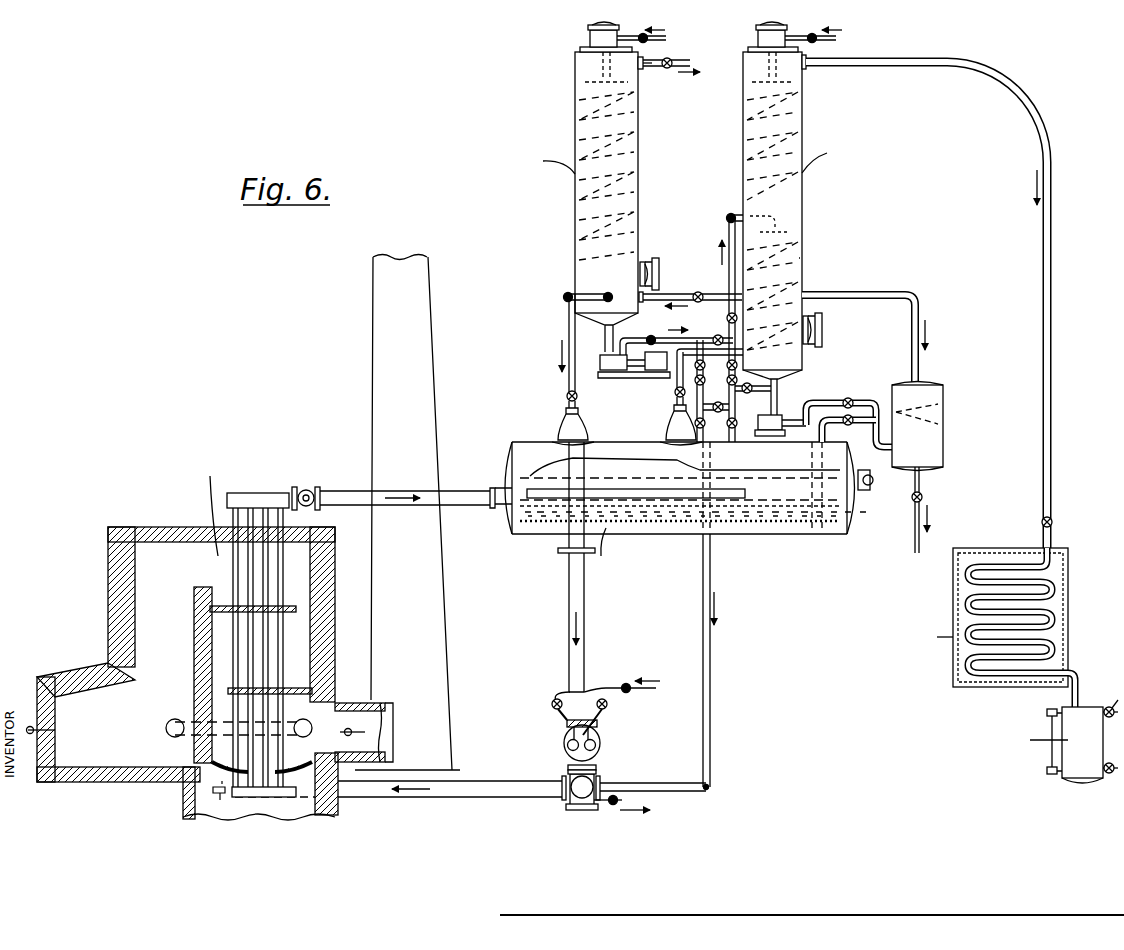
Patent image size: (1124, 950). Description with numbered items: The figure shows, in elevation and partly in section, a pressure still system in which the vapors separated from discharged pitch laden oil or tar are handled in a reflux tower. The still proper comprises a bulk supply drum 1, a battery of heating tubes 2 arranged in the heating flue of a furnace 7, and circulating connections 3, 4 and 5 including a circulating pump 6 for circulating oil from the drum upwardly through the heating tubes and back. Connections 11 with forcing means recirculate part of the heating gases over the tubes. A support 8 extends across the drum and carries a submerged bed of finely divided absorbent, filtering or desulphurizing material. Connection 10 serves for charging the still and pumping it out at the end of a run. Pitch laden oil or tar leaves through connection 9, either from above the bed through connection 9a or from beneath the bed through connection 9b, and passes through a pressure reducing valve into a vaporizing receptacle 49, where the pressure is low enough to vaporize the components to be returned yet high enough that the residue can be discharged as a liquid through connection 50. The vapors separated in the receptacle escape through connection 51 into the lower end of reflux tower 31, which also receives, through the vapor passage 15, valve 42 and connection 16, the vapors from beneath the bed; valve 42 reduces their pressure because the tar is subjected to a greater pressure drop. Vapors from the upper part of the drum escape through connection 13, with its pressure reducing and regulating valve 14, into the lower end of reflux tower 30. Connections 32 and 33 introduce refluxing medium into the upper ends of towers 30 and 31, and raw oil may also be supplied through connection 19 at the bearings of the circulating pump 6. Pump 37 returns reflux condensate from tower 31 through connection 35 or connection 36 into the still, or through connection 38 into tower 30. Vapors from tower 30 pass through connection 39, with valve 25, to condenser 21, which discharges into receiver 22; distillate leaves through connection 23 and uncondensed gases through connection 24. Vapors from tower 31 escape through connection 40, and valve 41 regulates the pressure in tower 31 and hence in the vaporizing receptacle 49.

The bulk supply drum 1 is at (522, 441).
The battery of heating tubes 2 is at (275, 640).
The circulating connection 3 is at (566, 623).
The circulating connection 4 is at (488, 779).
The circulating connection 5 is at (336, 490).
The circulating pump 6 is at (562, 739).
The furnace 7 is at (108, 569).
The support 8 is at (535, 530).
The connection 9 is at (882, 440).
The connection 9a is at (823, 529).
The connection 9b is at (821, 530).
The connection 10 is at (628, 801).
The connections 11 is at (180, 720).
The connection 13 is at (676, 385).
The pressure reducing and regulating valve 14 is at (676, 402).
The vapor passage 15 is at (585, 462).
The connection 16 is at (566, 318).
The connection 19 is at (633, 693).
The condenser 21 is at (953, 674).
The receiver 22 is at (1062, 776).
The connection 23 is at (1112, 777).
The connection 24 is at (1111, 706).
The valve 25 is at (1057, 522).
The reflux tower 30 is at (742, 146).
The reflux tower 31 is at (640, 174).
The connection 32 is at (836, 42).
The connection 33 is at (660, 43).
The connection 35 is at (728, 528).
The connection 36 is at (712, 669).
The pump 37 is at (598, 380).
The connection 38 is at (728, 234).
The connection 39 is at (1045, 368).
The connection 40 is at (644, 68).
The valve 41 is at (666, 62).
The valve 42 is at (566, 398).
The vaporizing receptacle 49 is at (944, 438).
The connection 50 is at (913, 542).
The connection 51 is at (855, 293).